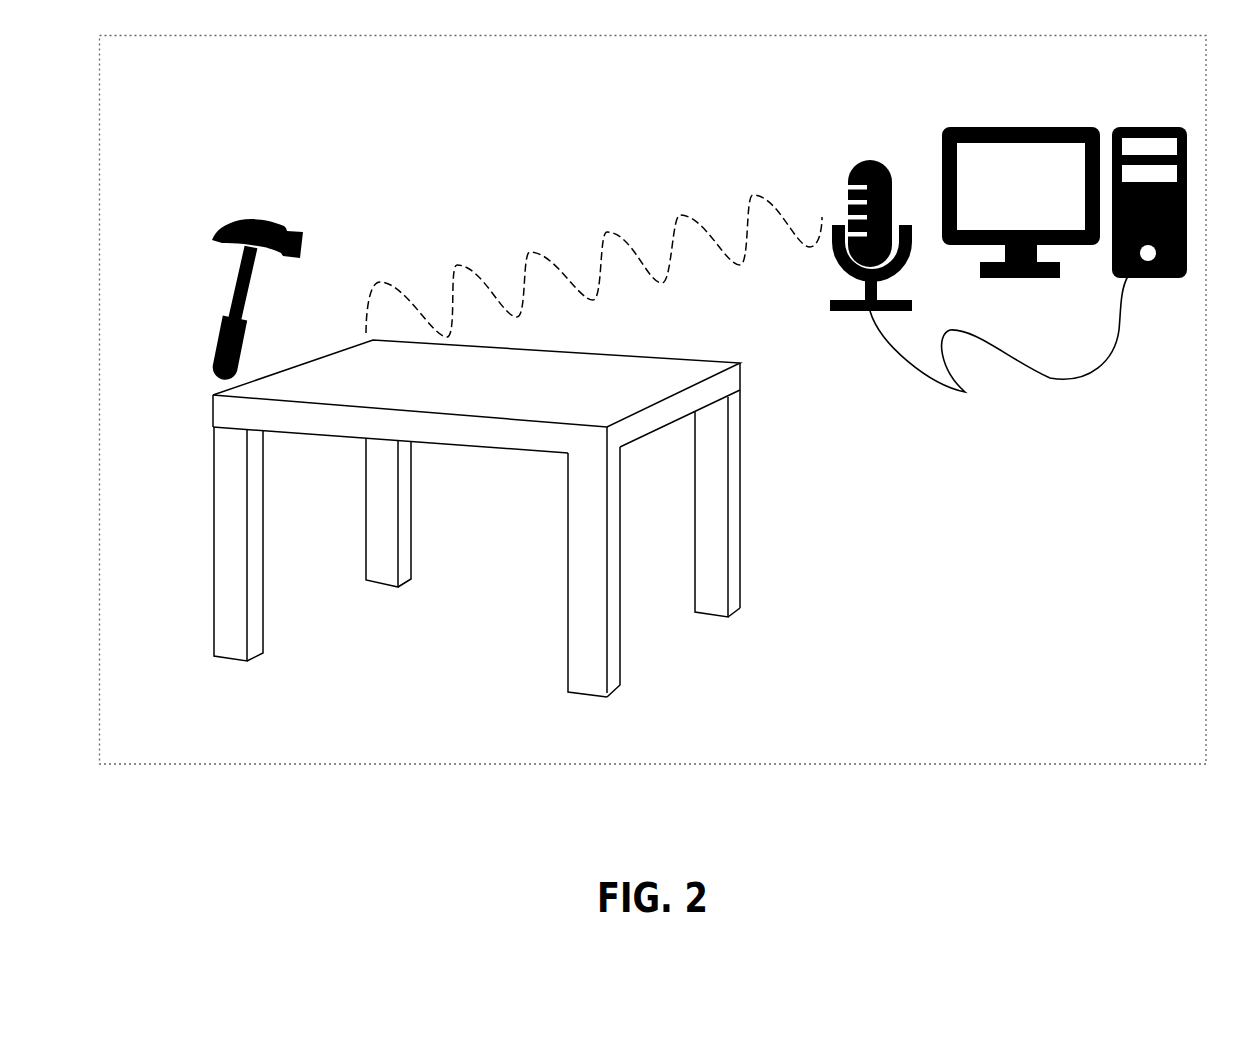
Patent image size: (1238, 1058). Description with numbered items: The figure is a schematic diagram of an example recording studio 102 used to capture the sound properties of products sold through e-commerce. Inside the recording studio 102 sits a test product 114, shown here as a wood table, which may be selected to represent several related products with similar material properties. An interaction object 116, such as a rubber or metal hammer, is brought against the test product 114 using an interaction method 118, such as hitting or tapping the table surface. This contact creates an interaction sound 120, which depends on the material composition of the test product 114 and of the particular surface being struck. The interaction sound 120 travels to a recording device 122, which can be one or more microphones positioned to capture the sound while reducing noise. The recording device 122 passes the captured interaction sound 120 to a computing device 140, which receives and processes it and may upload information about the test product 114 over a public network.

The recording studio 102 is at (373, 84).
The test product 114 is at (437, 442).
The interaction object 116 is at (243, 217).
The interaction method 118 is at (383, 378).
The interaction sound 120 is at (535, 246).
The recording device 122 is at (872, 154).
The computing device 140 is at (1110, 128).